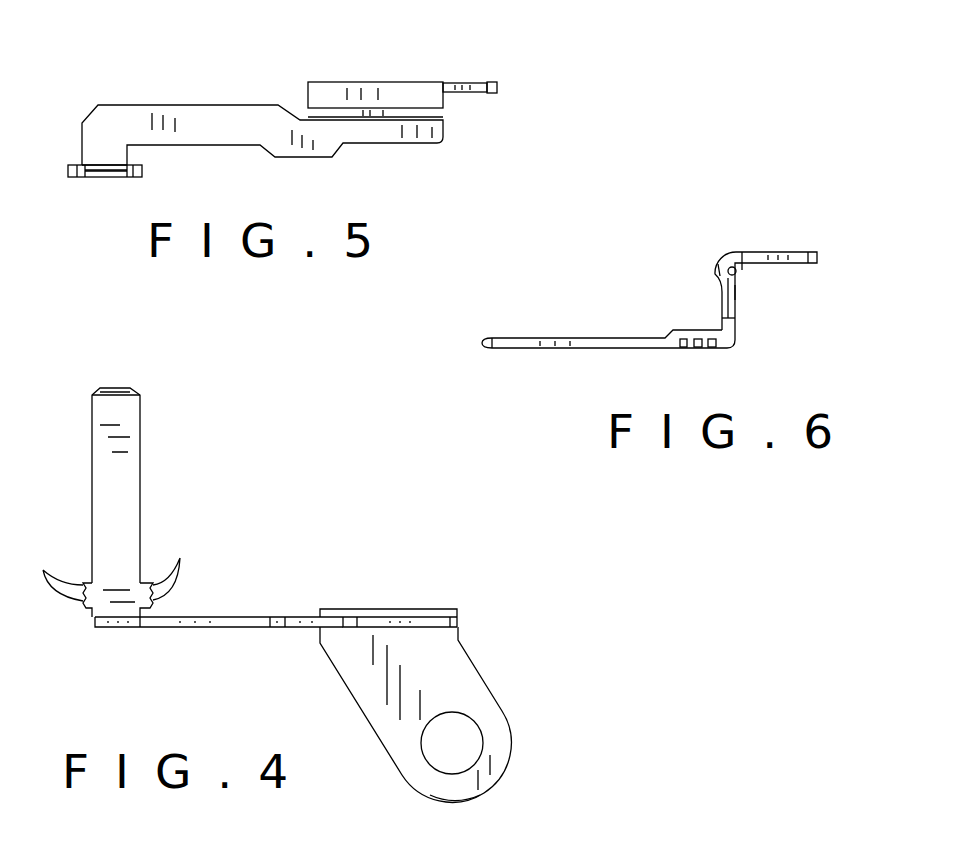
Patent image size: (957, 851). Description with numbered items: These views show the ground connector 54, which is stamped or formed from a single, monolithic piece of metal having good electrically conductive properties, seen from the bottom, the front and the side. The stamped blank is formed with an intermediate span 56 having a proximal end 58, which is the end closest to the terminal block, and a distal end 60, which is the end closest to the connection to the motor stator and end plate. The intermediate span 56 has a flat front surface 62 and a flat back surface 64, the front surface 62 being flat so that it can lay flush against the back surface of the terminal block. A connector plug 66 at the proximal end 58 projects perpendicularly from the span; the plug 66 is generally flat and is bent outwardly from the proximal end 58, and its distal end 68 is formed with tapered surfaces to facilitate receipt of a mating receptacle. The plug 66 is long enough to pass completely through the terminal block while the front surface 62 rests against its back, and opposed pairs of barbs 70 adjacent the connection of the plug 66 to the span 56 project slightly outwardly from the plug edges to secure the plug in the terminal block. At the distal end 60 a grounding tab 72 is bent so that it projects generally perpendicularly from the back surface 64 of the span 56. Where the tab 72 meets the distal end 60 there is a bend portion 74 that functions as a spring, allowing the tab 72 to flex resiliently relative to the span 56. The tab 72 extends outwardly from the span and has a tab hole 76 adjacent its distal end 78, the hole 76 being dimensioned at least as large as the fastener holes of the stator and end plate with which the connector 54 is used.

In FIG. 5, the ground connector 54 is at (283, 56).
In FIG. 6, the ground connector 54 is at (608, 278).
In FIG. 4, the ground connector 54 is at (277, 574).
In FIG. 5, the intermediate span 56 is at (242, 113).
In FIG. 6, the intermediate span 56 is at (737, 307).
In FIG. 4, the intermediate span 56 is at (247, 630).
In FIG. 5, the proximal end 58 is at (82, 135).
In FIG. 4, the proximal end 58 is at (95, 627).
In FIG. 5, the distal end 60 is at (443, 125).
In FIG. 6, the distal end 60 is at (718, 282).
In FIG. 4, the distal end 60 is at (457, 620).
In FIG. 5, the front surface 62 is at (198, 117).
In FIG. 6, the front surface 62 is at (722, 305).
In FIG. 4, the front surface 62 is at (223, 617).
In FIG. 6, the back surface 64 is at (737, 293).
In FIG. 4, the back surface 64 is at (198, 630).
In FIG. 5, the connector plug 66 is at (98, 178).
In FIG. 6, the connector plug 66 is at (602, 338).
In FIG. 4, the connector plug 66 is at (108, 477).
In FIG. 5, the distal end of the plug 68 is at (112, 177).
In FIG. 6, the distal end of the plug 68 is at (487, 338).
In FIG. 4, the distal end of the plug 68 is at (123, 387).
In FIG. 6, the barbs 70 is at (704, 348).
In FIG. 4, the barbs 70 is at (180, 558).
In FIG. 5, the grounding tab 72 is at (475, 82).
In FIG. 6, the grounding tab 72 is at (807, 252).
In FIG. 4, the grounding tab 72 is at (498, 738).
In FIG. 5, the bend portion 74 is at (398, 97).
In FIG. 6, the bend portion 74 is at (720, 262).
In FIG. 4, the bend portion 74 is at (387, 608).
In FIG. 4, the tab hole 76 is at (465, 732).
In FIG. 5, the distal end of the tab 78 is at (497, 87).
In FIG. 6, the distal end of the tab 78 is at (820, 258).
In FIG. 4, the distal end of the tab 78 is at (480, 795).